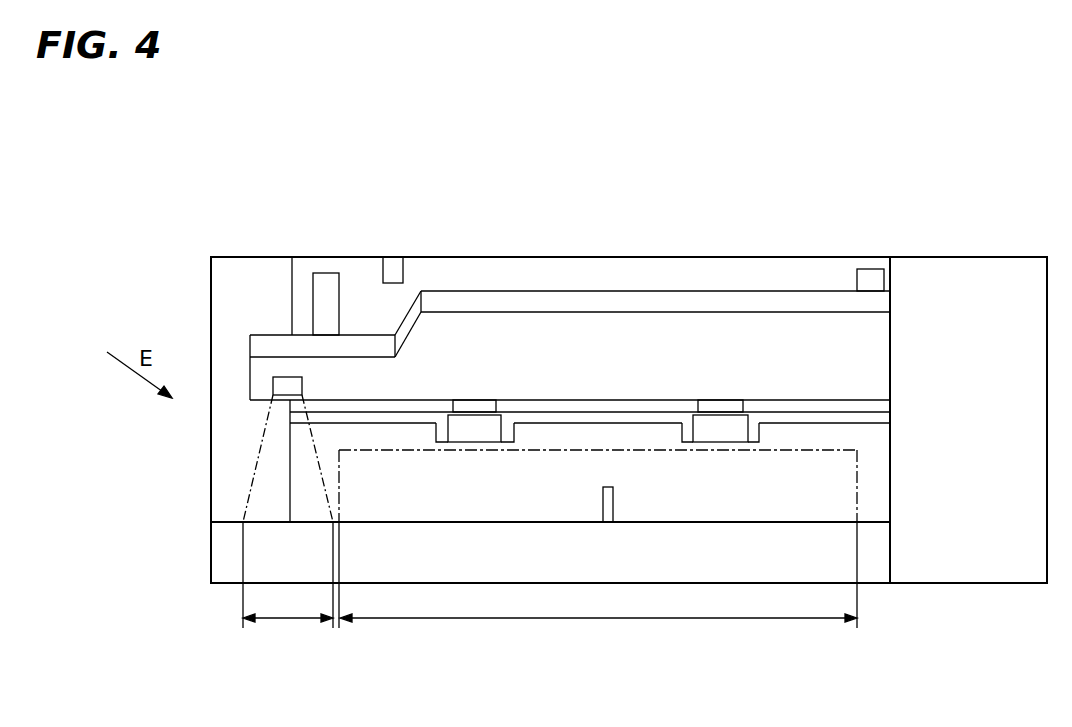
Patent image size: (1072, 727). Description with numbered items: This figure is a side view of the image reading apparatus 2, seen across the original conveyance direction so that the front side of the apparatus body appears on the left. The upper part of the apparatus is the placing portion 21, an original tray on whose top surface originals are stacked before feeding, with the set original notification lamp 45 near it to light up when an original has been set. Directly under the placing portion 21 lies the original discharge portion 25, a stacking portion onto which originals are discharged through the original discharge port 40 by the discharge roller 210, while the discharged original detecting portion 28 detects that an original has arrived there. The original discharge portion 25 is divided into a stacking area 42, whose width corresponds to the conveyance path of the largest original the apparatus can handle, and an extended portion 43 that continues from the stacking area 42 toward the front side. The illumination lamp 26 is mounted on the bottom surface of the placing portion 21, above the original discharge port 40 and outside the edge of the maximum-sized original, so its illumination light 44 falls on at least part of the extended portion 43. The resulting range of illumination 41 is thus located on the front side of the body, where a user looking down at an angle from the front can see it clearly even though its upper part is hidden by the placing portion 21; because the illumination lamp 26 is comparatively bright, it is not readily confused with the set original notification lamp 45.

The image reading apparatus 2 is at (701, 248).
The placing portion 21 is at (522, 288).
The original discharge portion 25 is at (458, 521).
The illumination lamp 26 is at (278, 383).
The discharged original detecting portion 28 is at (614, 493).
The original discharge port 40 is at (606, 415).
The range of illumination 41 is at (282, 620).
The stacking area 42 is at (558, 622).
The extended portion 43 is at (308, 521).
The illumination light 44 is at (258, 452).
The set original notification lamp 45 is at (391, 268).
The discharge roller 210 is at (477, 425).